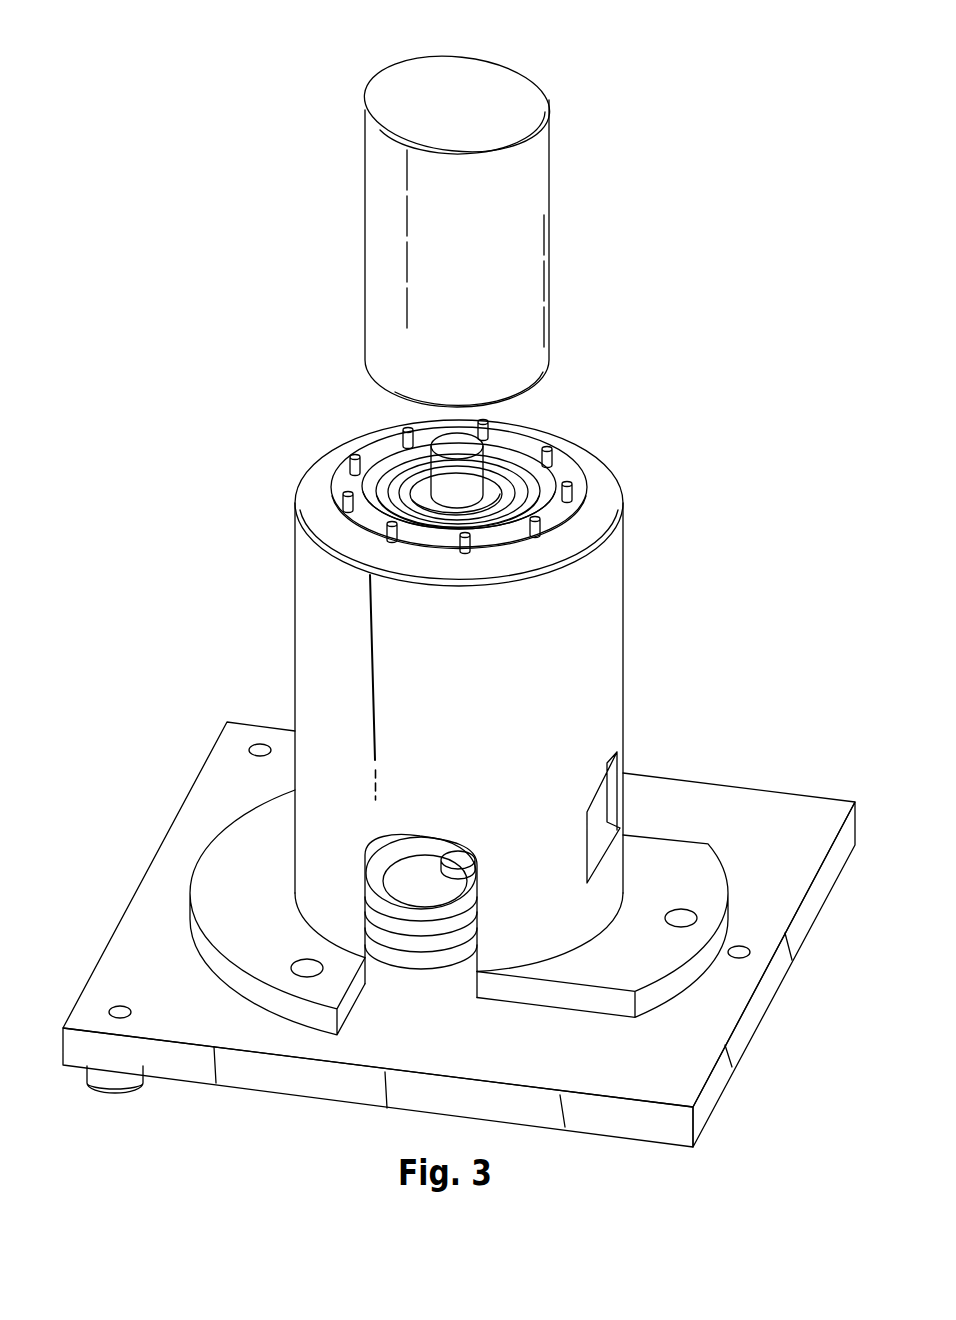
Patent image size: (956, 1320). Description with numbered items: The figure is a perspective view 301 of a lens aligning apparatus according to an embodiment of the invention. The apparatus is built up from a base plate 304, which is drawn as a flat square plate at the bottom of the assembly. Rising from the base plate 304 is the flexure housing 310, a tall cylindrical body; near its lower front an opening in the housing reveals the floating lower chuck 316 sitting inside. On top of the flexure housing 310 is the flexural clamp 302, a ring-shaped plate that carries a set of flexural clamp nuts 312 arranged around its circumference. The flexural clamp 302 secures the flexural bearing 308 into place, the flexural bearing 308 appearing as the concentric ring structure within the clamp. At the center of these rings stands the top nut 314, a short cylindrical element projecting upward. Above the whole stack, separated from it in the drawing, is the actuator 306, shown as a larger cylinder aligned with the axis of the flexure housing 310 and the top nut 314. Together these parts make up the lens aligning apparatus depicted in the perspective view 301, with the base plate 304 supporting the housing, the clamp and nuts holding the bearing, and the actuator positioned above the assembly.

The perspective view 301 is at (258, 182).
The flexural clamp 302 is at (342, 483).
The base plate 304 is at (592, 1064).
The actuator 306 is at (530, 182).
The flexural bearing 308 is at (512, 503).
The flexure housing 310 is at (560, 664).
The flexural clamp nuts 312 is at (575, 497).
The top nut 314 is at (487, 468).
The floating lower chuck 316 is at (432, 888).